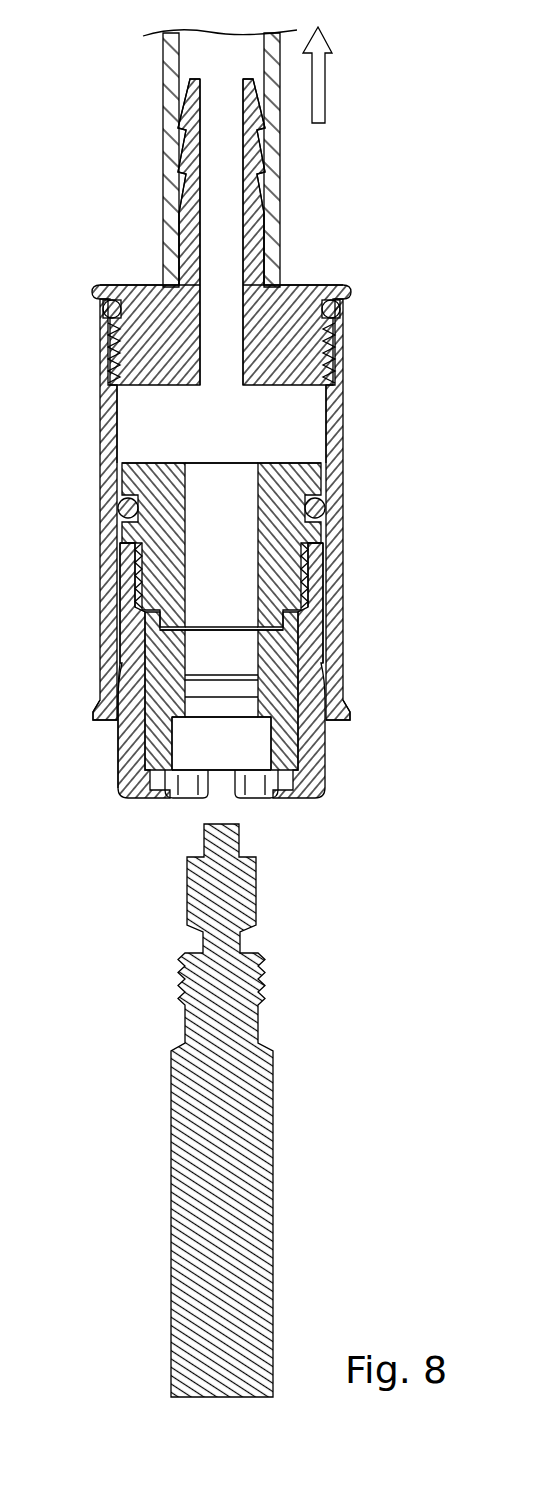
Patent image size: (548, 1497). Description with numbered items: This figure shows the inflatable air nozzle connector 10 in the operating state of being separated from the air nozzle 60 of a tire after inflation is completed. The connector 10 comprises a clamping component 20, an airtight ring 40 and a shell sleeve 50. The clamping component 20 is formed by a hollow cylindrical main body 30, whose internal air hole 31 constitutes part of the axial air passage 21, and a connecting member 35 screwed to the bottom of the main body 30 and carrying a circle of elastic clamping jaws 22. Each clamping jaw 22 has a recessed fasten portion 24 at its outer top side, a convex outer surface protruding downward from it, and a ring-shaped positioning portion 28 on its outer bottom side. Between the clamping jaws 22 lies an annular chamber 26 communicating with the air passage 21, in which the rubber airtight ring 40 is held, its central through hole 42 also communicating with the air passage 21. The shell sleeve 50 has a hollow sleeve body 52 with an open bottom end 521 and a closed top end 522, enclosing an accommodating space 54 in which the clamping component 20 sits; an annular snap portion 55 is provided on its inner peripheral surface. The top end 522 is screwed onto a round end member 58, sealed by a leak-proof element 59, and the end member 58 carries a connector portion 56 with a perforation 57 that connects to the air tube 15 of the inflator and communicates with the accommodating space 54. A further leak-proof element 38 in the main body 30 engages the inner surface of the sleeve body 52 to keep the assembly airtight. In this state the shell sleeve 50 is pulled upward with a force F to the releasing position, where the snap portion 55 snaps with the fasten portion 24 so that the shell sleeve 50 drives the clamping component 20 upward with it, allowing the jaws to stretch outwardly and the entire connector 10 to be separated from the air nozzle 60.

The inflatable air nozzle connector 10 is at (85, 245).
The air tube 15 is at (173, 63).
The clamping component 20 is at (291, 462).
The air passage 21 is at (213, 478).
The clamping jaws 22 is at (312, 737).
The fasten portion 24 is at (323, 633).
The annular chamber 26 is at (320, 760).
The positioning portion 28 is at (120, 757).
The main body 30 is at (300, 486).
The air hole 31 is at (232, 522).
The connecting member 35 is at (115, 628).
The leak-proof element 38 is at (113, 510).
The airtight ring 40 is at (115, 692).
The through hole 42 is at (220, 660).
The shell sleeve 50 is at (365, 276).
The sleeve body 52 is at (340, 352).
The accommodating space 54 is at (160, 408).
The annular snap portion 55 is at (320, 680).
The connector portion 56 is at (258, 160).
The perforation 57 is at (220, 185).
The end member 58 is at (157, 287).
The leak-proof element 59 is at (98, 303).
The air nozzle 60 is at (257, 1070).
The bottom end 521 is at (98, 717).
The top end 522 is at (345, 283).